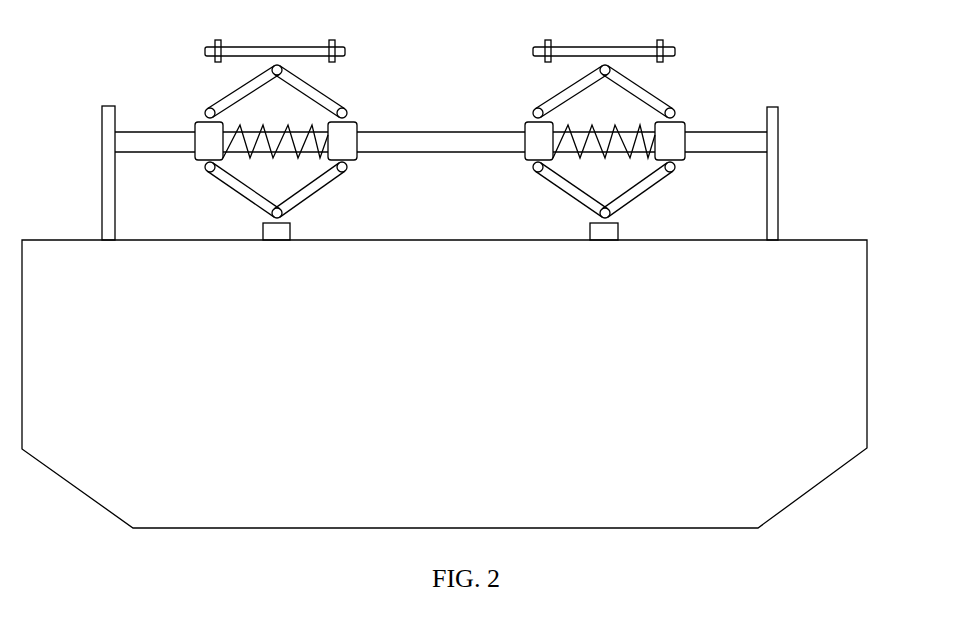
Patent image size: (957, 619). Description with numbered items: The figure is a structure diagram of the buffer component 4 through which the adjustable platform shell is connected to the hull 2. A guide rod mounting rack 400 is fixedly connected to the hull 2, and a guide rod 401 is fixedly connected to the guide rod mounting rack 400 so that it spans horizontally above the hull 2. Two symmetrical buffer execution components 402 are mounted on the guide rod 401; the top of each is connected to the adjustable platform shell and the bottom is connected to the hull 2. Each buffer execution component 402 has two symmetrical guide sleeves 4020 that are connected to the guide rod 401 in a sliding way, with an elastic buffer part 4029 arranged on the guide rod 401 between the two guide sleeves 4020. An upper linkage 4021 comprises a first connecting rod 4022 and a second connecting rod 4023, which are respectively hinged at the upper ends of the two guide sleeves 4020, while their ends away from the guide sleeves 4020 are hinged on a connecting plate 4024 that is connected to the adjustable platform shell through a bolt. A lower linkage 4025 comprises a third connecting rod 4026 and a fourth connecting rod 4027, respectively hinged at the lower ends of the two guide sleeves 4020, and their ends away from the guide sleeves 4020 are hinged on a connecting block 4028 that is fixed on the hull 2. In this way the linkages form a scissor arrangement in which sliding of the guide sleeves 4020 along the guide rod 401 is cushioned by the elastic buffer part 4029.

The hull 2 is at (833, 367).
The buffer component 4 is at (469, 173).
The guide rod mounting rack 400 is at (773, 188).
The guide rod 401 is at (718, 140).
The buffer execution component 402 is at (672, 112).
The guide sleeve 4020 is at (340, 148).
The upper linkage 4021 is at (313, 97).
The first connecting rod 4022 is at (240, 93).
The second connecting rod 4023 is at (350, 105).
The connecting plate 4024 is at (345, 50).
The lower linkage 4025 is at (318, 184).
The third connecting rod 4026 is at (243, 193).
The fourth connecting rod 4027 is at (295, 201).
The connecting block 4028 is at (282, 233).
The elastic buffer part 4029 is at (293, 148).